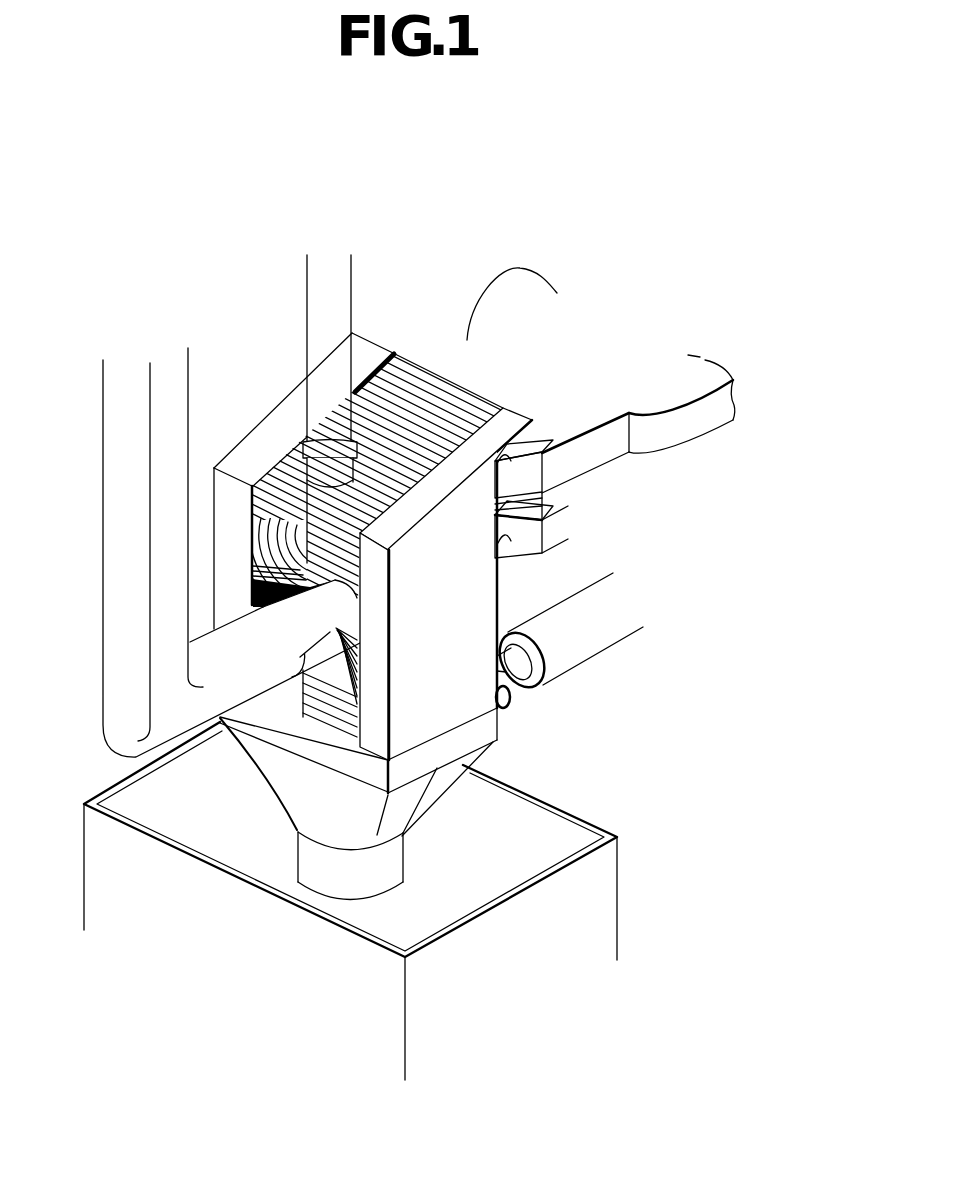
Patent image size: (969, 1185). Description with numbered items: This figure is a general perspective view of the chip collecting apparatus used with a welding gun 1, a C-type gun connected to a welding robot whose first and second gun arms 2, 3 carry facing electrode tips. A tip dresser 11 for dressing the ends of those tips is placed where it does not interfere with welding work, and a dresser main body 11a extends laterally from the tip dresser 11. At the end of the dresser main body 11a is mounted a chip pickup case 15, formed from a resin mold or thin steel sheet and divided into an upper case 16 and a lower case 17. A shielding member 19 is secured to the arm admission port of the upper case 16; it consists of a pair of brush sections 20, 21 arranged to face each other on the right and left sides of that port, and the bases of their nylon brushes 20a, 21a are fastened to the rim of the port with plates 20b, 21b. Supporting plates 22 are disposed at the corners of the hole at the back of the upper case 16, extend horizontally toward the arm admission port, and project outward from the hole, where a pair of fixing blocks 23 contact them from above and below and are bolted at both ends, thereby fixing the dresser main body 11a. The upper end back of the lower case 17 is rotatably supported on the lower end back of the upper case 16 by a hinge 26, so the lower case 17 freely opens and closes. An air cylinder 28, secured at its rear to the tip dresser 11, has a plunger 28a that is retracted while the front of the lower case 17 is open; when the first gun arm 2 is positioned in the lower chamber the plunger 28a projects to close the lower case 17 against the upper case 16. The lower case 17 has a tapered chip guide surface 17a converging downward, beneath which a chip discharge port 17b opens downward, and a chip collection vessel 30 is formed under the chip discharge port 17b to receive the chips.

The welding gun 1 is at (255, 236).
The first gun arm 2 is at (176, 378).
The second gun arm 3 is at (327, 273).
The tip dresser 11 is at (518, 243).
The dresser main body 11a is at (703, 417).
The chip pickup case 15 is at (743, 547).
The upper case 16 is at (497, 603).
The lower case 17 is at (480, 783).
The chip guide surface 17a is at (420, 805).
The chip discharge port 17b is at (398, 868).
The shielding member 19 is at (457, 236).
The brush section 20 is at (392, 336).
The brush 20a is at (387, 390).
The plate 20b is at (270, 438).
The brush section 21 is at (457, 364).
The brush 21a is at (467, 407).
The plate 21b is at (442, 606).
The supporting plate 22 is at (543, 502).
The fixing block 23 is at (542, 447).
The hinge 26 is at (512, 700).
The air cylinder 28 is at (597, 637).
The plunger 28a is at (513, 670).
The chip collection vessel 30 is at (608, 918).